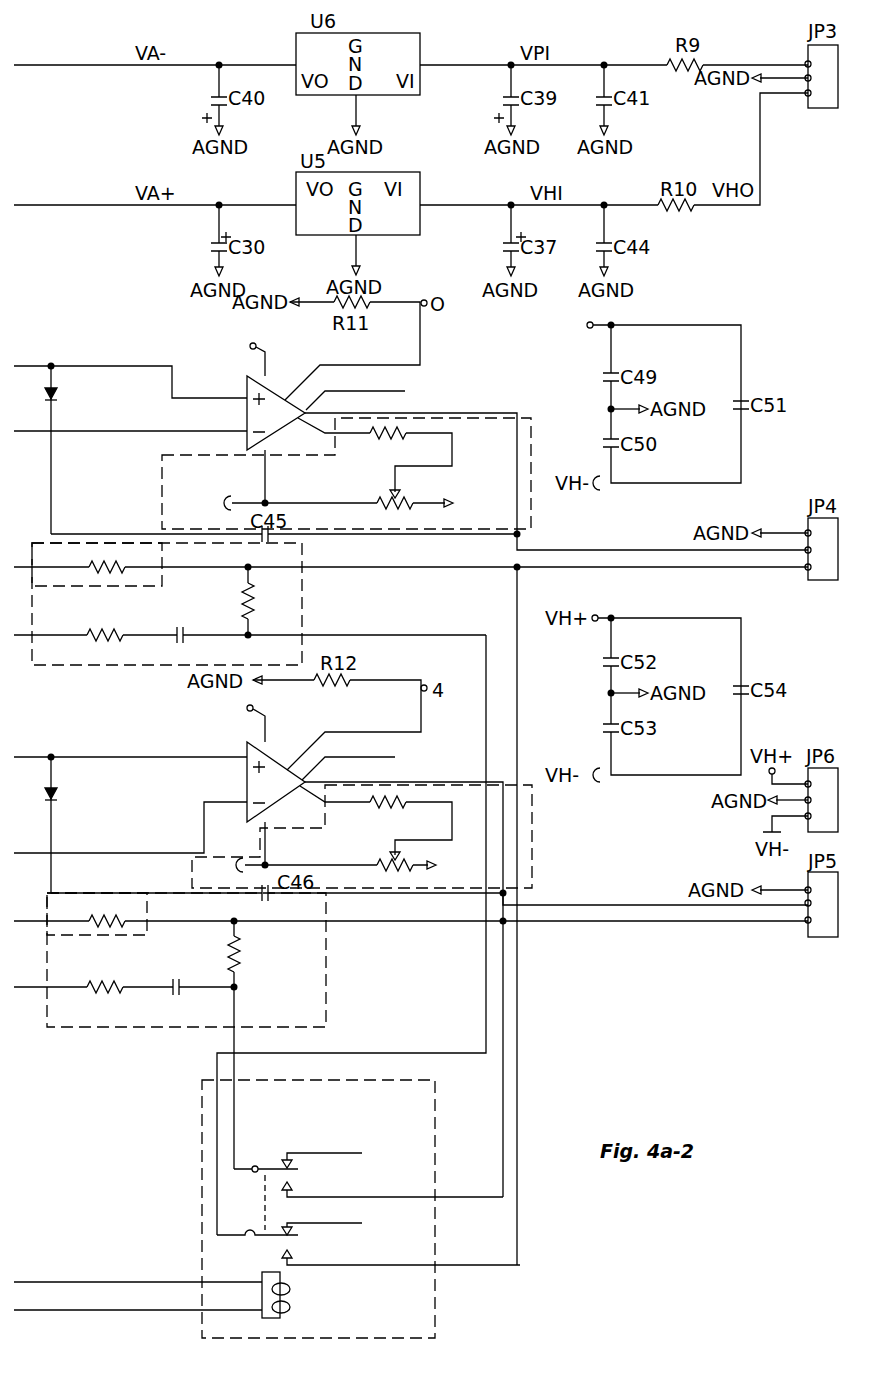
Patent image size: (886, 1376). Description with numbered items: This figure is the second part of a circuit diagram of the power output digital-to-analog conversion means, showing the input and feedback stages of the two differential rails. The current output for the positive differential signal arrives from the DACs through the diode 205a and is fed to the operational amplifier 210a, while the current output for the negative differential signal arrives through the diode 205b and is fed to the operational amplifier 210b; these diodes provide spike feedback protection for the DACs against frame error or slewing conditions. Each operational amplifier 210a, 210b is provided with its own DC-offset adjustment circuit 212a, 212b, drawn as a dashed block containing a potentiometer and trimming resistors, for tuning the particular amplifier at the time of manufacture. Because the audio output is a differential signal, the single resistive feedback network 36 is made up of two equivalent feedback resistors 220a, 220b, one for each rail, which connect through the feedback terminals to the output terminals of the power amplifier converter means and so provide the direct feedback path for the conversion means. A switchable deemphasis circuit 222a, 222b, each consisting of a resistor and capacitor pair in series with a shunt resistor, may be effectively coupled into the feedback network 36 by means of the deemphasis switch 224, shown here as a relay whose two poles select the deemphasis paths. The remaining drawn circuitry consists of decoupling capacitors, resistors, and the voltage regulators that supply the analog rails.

The single resistive feedback network 36 is at (302, 603).
The diode 205a is at (57, 804).
The diode 205b is at (60, 392).
The operational amplifier 210a is at (247, 777).
The operational amplifier 210b is at (247, 377).
The DC-offset adjustment circuit 212a is at (532, 830).
The DC-offset adjustment circuit 212b is at (531, 505).
The feedback resistor 220a is at (63, 911).
The feedback resistor 220b is at (122, 566).
The switchable deemphasis circuit 222a is at (140, 1028).
The switchable deemphasis circuit 222b is at (30, 655).
The deemphasis switch 224 is at (202, 1130).